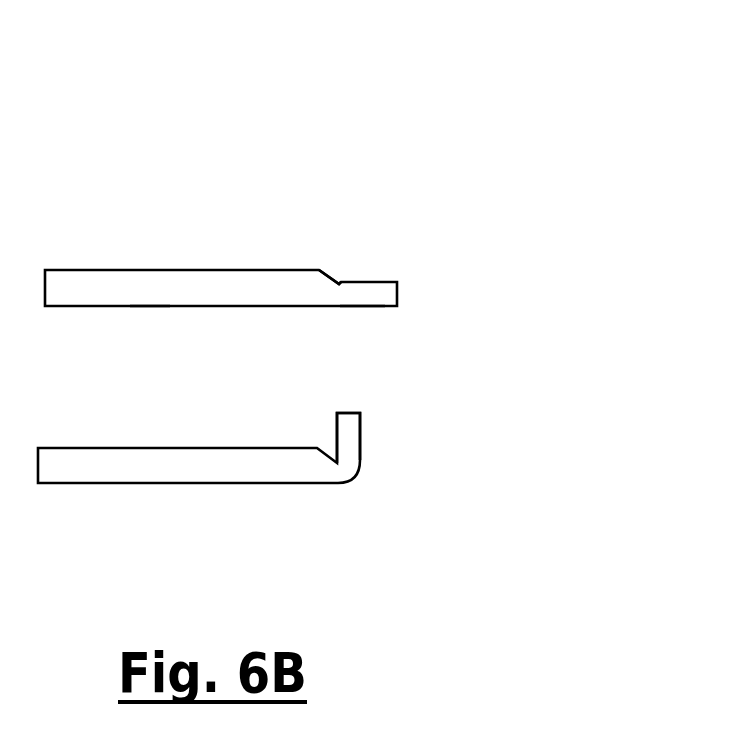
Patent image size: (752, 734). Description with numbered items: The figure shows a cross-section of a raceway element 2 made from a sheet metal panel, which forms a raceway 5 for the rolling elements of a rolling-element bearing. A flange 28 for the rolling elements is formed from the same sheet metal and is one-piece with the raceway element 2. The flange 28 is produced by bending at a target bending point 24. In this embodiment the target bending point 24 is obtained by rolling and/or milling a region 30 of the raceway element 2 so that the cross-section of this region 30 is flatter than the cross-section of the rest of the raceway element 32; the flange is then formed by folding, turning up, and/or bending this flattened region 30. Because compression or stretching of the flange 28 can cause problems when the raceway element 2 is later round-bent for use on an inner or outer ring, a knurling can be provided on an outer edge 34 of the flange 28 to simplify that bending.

The raceway element 2 is at (541, 141).
The raceway 5 is at (95, 270).
The target bending point 24 is at (349, 249).
The flange 28 is at (348, 428).
The region of the raceway element 30 is at (360, 334).
The rest of the raceway element 32 is at (147, 334).
The outer edge of the flange 34 is at (348, 412).